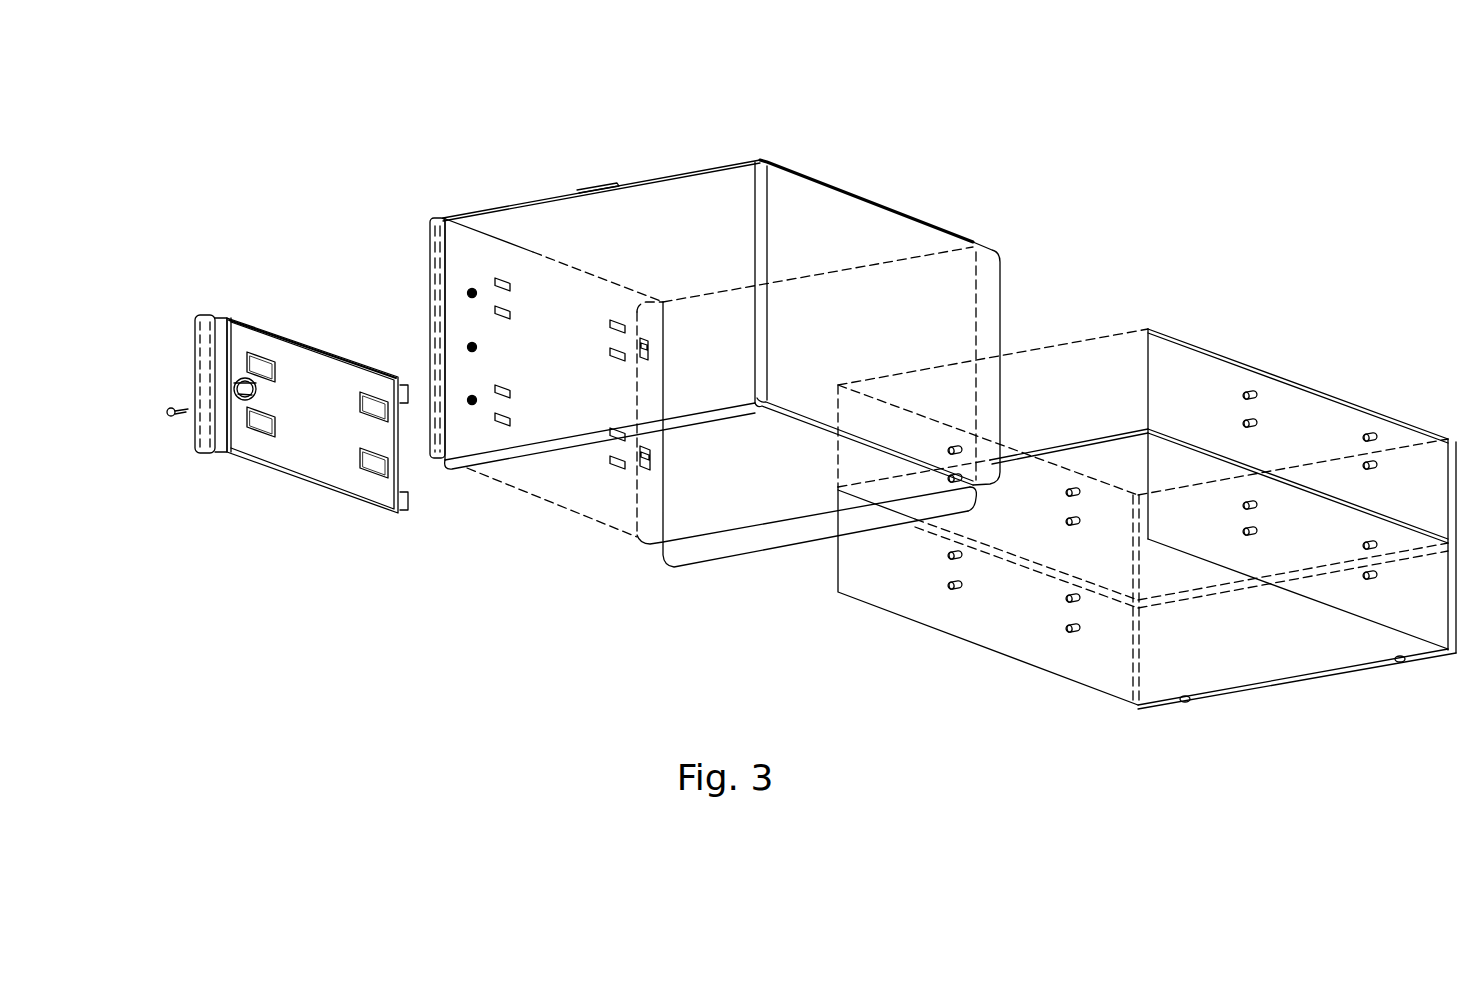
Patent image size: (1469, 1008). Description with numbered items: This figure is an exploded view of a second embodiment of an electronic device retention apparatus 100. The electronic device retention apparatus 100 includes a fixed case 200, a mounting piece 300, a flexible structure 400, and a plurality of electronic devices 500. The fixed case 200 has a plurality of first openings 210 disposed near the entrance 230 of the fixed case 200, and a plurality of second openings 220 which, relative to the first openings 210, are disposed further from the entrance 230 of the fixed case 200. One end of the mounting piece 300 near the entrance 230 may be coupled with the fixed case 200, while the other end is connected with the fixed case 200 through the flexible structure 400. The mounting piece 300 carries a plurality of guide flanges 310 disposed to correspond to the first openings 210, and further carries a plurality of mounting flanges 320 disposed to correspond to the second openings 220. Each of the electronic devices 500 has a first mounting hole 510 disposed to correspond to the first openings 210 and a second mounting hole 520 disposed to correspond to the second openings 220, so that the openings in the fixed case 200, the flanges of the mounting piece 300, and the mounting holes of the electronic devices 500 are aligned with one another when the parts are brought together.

The electronic device retention apparatus 100 is at (686, 122).
The fixed case 200 is at (829, 230).
The first openings 210 is at (618, 318).
The second openings 220 is at (510, 283).
The entrance 230 is at (950, 268).
The mounting piece 300 is at (320, 453).
The guide flanges 310 is at (378, 368).
The mounting flanges 320 is at (266, 326).
The flexible structure 400 is at (170, 418).
The electronic devices 500 is at (1287, 415).
The first mounting hole 510 is at (1080, 491).
The second mounting hole 520 is at (963, 449).